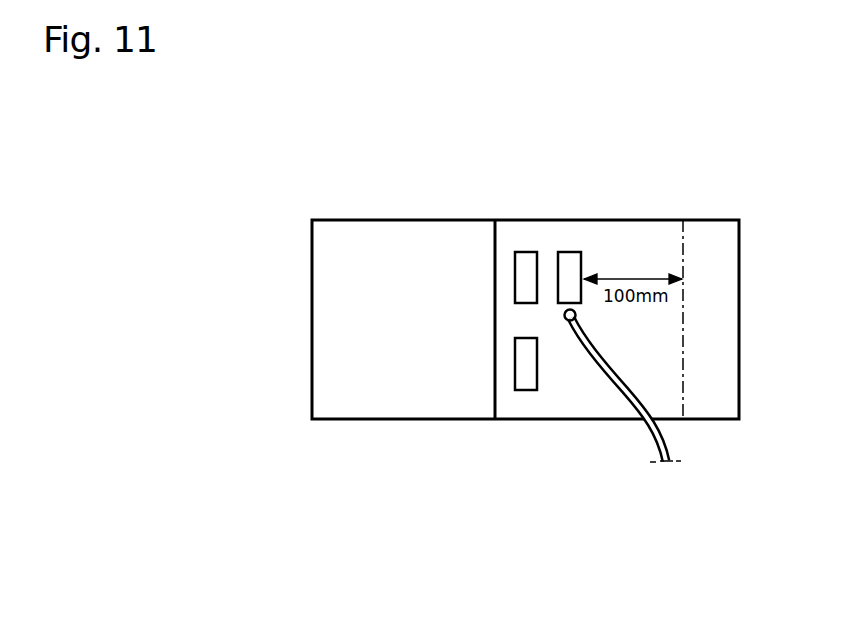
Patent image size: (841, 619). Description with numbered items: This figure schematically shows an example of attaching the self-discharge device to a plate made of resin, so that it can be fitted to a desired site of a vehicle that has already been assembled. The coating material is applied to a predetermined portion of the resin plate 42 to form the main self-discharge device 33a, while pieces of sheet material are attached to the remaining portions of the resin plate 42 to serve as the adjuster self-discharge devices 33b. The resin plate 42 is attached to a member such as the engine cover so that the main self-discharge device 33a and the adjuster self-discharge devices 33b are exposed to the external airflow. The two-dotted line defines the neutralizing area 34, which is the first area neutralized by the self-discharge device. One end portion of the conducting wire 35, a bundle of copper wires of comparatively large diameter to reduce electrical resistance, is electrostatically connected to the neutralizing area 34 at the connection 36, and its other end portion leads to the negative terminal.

The main self-discharge device 33a is at (390, 400).
The adjuster self-discharge device 33b is at (523, 262).
The neutralizing area 34 is at (653, 237).
The conducting wire 35 is at (668, 443).
The connection 36 is at (565, 320).
The resin plate 42 is at (514, 510).